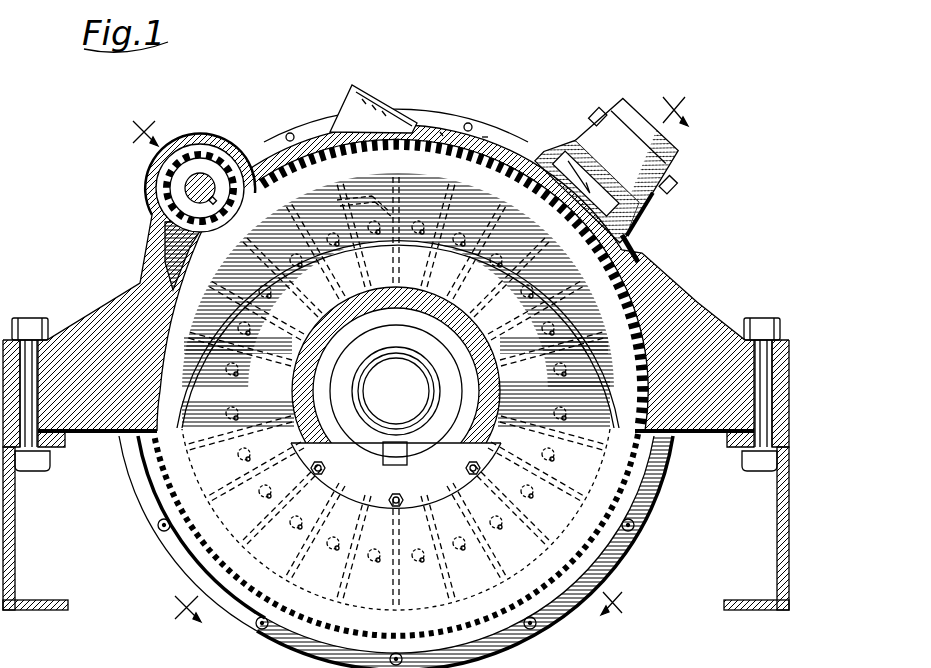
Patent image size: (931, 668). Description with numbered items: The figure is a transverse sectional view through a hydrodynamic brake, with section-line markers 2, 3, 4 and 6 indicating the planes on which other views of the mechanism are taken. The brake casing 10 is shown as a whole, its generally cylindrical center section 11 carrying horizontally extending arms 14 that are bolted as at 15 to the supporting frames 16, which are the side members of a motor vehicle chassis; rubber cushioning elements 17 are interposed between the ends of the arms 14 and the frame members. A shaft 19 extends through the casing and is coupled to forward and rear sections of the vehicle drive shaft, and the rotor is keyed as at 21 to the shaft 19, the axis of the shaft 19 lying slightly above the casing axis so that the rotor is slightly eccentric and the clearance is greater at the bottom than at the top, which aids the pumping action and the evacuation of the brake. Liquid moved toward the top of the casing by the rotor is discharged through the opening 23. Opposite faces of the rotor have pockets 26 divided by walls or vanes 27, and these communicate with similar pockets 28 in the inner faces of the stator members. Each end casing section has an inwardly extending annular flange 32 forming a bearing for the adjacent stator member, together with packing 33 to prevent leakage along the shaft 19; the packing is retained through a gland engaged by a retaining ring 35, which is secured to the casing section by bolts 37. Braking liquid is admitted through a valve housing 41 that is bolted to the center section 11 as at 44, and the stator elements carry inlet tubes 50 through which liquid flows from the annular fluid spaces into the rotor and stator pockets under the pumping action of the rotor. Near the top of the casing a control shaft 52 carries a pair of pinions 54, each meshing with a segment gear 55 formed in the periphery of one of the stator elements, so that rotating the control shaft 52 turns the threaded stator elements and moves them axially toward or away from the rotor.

The pole piece 2 is at (280, 262).
The section line 3- 3 is at (373, 370).
The section line 4- 4 is at (424, 361).
The stator winding 6 is at (316, 239).
The brake casing 10 is at (487, 133).
The center section 11 is at (443, 132).
The arms 14 is at (92, 312).
The bolts 15 is at (34, 318).
The supporting frames 16 is at (50, 600).
The cushioning elements 17 is at (62, 447).
The shaft 19 is at (423, 397).
The key 21 is at (407, 438).
The opening 23 is at (380, 92).
The pockets 26 is at (372, 196).
The walls or vanes 27 is at (213, 380).
The pockets 28 is at (447, 327).
The annular flange 32 is at (405, 307).
The packing 33 is at (323, 387).
The retaining ring 35 is at (330, 467).
The bolts 37 is at (397, 494).
The valve housing 41 is at (606, 106).
The bolts 44 is at (668, 193).
The inlet tubes 50 is at (403, 222).
The control shaft 52 is at (232, 158).
The pinions 54 is at (206, 173).
The segment gear 55 is at (485, 137).